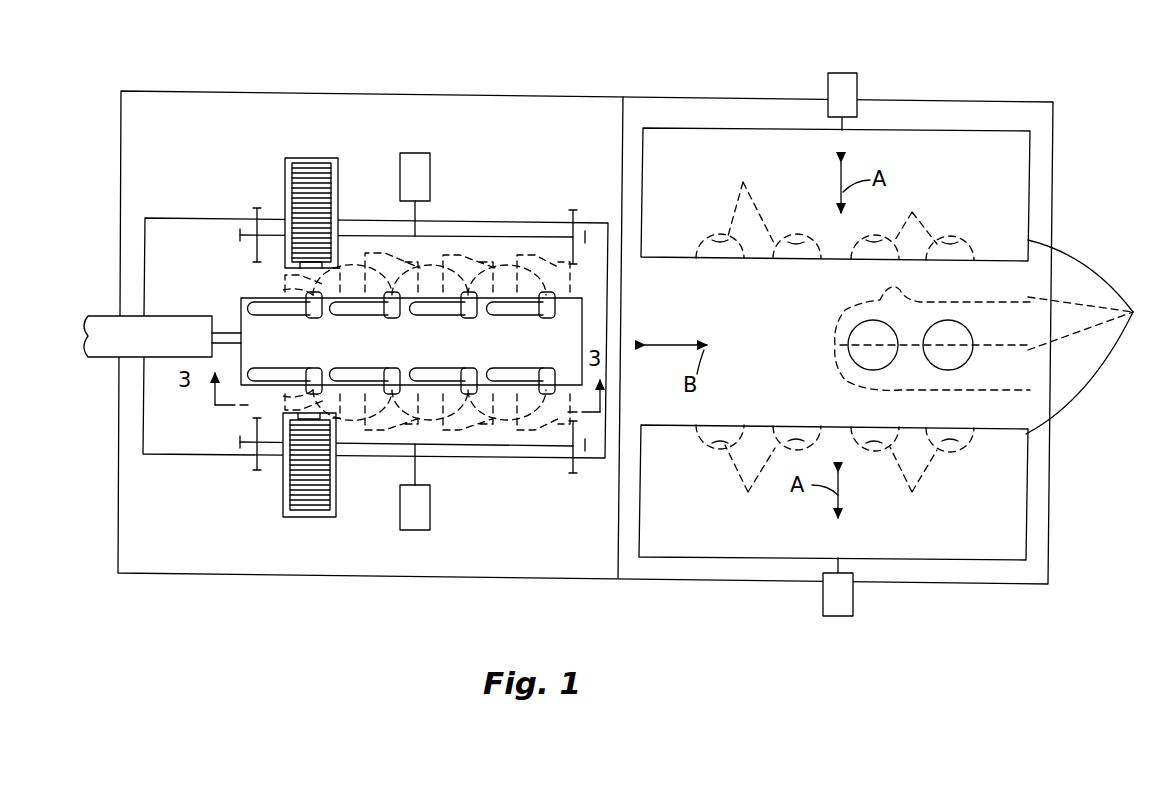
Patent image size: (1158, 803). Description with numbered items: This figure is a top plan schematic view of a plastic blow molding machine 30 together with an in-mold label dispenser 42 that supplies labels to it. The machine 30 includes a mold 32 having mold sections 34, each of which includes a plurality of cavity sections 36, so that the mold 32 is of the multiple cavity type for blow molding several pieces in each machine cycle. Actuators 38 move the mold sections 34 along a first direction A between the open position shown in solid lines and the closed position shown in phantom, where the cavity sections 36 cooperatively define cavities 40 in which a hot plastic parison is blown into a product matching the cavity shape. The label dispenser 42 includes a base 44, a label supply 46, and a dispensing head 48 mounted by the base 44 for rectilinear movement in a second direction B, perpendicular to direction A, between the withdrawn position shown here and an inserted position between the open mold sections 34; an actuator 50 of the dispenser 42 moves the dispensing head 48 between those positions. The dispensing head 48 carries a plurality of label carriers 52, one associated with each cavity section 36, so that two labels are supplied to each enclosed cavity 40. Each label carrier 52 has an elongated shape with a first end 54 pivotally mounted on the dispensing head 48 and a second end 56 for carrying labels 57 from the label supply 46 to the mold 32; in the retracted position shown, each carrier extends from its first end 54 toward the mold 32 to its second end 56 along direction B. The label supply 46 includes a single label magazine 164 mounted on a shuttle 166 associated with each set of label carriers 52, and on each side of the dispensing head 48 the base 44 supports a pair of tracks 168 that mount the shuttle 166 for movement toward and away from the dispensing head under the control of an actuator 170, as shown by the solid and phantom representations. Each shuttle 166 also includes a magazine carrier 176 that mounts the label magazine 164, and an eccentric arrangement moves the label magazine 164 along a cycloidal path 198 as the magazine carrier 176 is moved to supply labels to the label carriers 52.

The plastic blow molding machine 30 is at (688, 86).
The mold 32 is at (1045, 200).
The mold sections 34 is at (1092, 337).
The cavity sections 36 is at (835, 339).
The actuators 38 is at (858, 88).
The cavity 40 is at (940, 322).
The in-mold label dispenser 42 is at (495, 130).
The base 44 is at (517, 458).
The label supply 46 is at (299, 311).
The dispensing head 48 is at (250, 298).
The actuator 50 is at (92, 360).
The label carriers 52 is at (290, 321).
The first end 54 is at (262, 338).
The second end 56 is at (330, 338).
The labels 57 is at (322, 200).
The label magazine 164 is at (312, 170).
The shuttle 166 is at (517, 262).
The tracks 168 is at (257, 225).
The actuator 170 is at (430, 160).
The magazine carrier 176 is at (285, 200).
The cycloidal path 198 is at (516, 268).